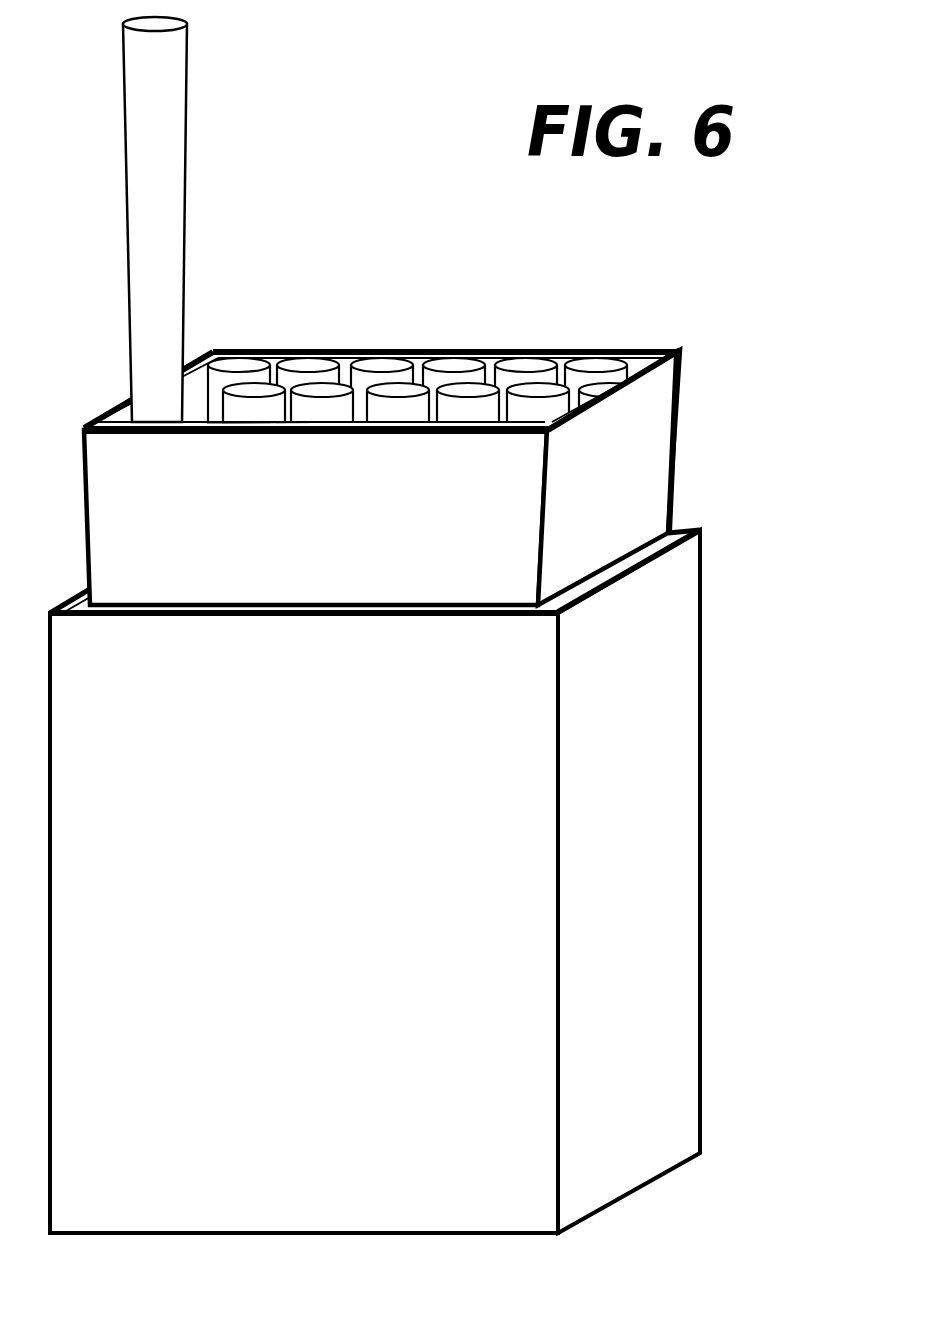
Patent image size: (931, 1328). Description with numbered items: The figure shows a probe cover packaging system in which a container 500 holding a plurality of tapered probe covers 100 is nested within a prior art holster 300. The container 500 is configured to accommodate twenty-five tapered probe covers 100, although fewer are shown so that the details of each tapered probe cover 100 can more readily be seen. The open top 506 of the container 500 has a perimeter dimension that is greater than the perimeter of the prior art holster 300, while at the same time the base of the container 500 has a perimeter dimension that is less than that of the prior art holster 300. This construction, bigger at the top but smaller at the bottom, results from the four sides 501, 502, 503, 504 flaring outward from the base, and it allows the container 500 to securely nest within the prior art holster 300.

The tapered probe cover 100 is at (168, 172).
The prior art holster 300 is at (746, 733).
The container 500 is at (724, 422).
The side 501 is at (107, 473).
The side 502 is at (628, 462).
The side 503 is at (436, 349).
The side 504 is at (107, 408).
The open top 506 is at (194, 386).